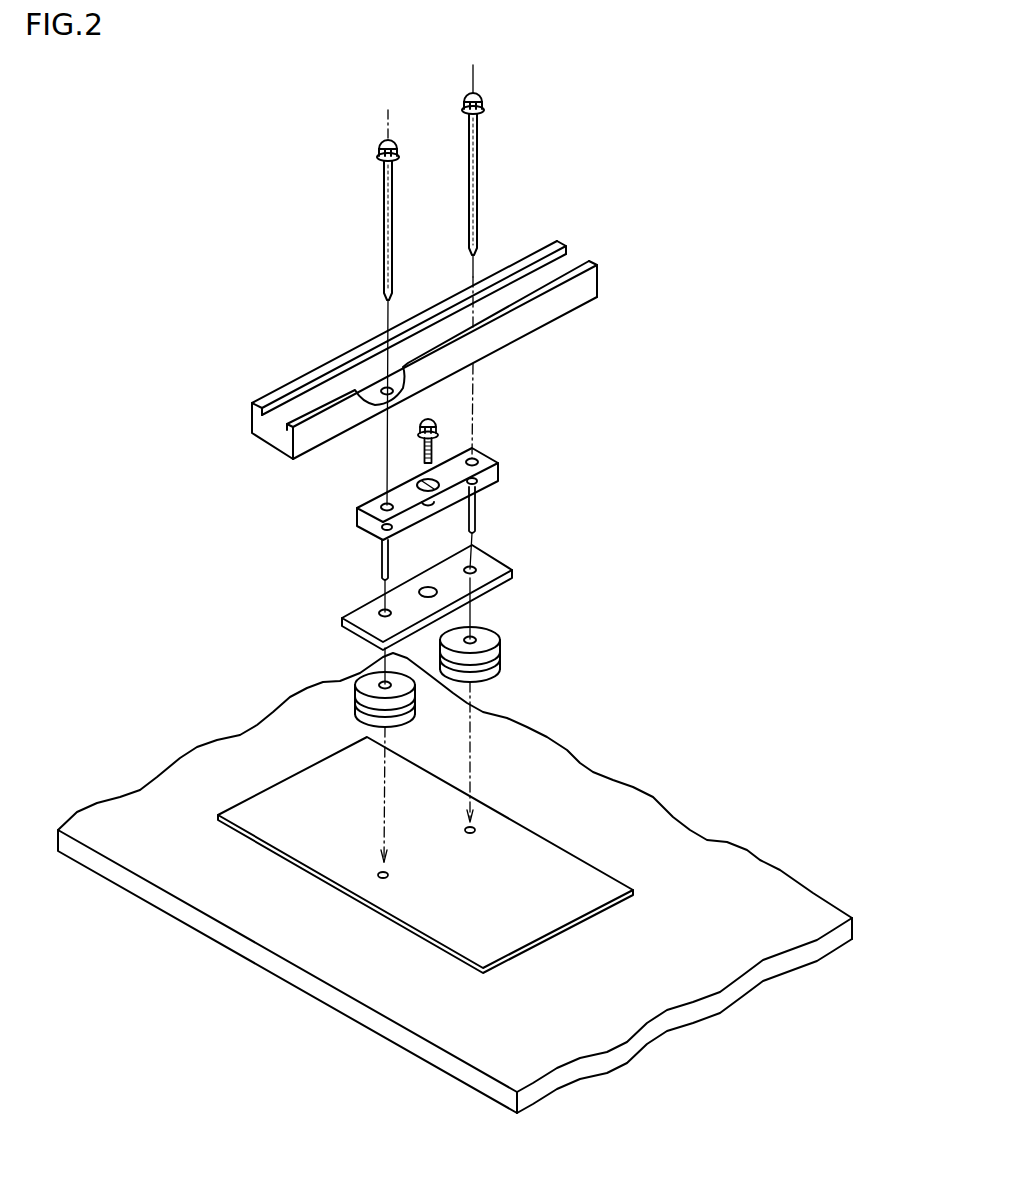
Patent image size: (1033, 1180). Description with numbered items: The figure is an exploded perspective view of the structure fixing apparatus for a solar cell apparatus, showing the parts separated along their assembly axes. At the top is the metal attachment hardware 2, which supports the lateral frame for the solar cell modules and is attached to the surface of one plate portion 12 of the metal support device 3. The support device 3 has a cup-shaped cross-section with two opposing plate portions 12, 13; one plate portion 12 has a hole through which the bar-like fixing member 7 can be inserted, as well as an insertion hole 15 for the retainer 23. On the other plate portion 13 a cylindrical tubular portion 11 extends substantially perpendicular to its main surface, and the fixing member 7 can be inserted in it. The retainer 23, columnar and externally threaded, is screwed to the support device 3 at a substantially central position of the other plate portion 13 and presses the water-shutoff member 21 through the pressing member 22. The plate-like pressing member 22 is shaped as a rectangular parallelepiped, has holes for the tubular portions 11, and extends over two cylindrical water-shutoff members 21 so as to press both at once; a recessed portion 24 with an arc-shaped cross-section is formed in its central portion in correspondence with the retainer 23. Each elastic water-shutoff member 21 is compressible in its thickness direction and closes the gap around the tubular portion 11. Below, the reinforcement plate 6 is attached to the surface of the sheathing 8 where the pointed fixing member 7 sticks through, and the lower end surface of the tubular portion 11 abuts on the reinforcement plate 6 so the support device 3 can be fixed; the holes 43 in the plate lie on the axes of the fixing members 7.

The attachment hardware 2 is at (596, 290).
The support device 3 is at (401, 499).
The reinforcement plate 6 is at (522, 862).
The fixing member 7 is at (385, 143).
The sheathing 8 is at (637, 828).
The tubular portion 11 is at (478, 512).
The one plate portion 12 is at (371, 506).
The other plate portion 13 is at (366, 528).
The insertion hole 15 is at (420, 483).
The water-shutoff member 21 is at (491, 638).
The pressing member 22 is at (454, 594).
The retainer 23 is at (433, 424).
The recessed portion 24 is at (437, 591).
The hole 43 is at (380, 775).